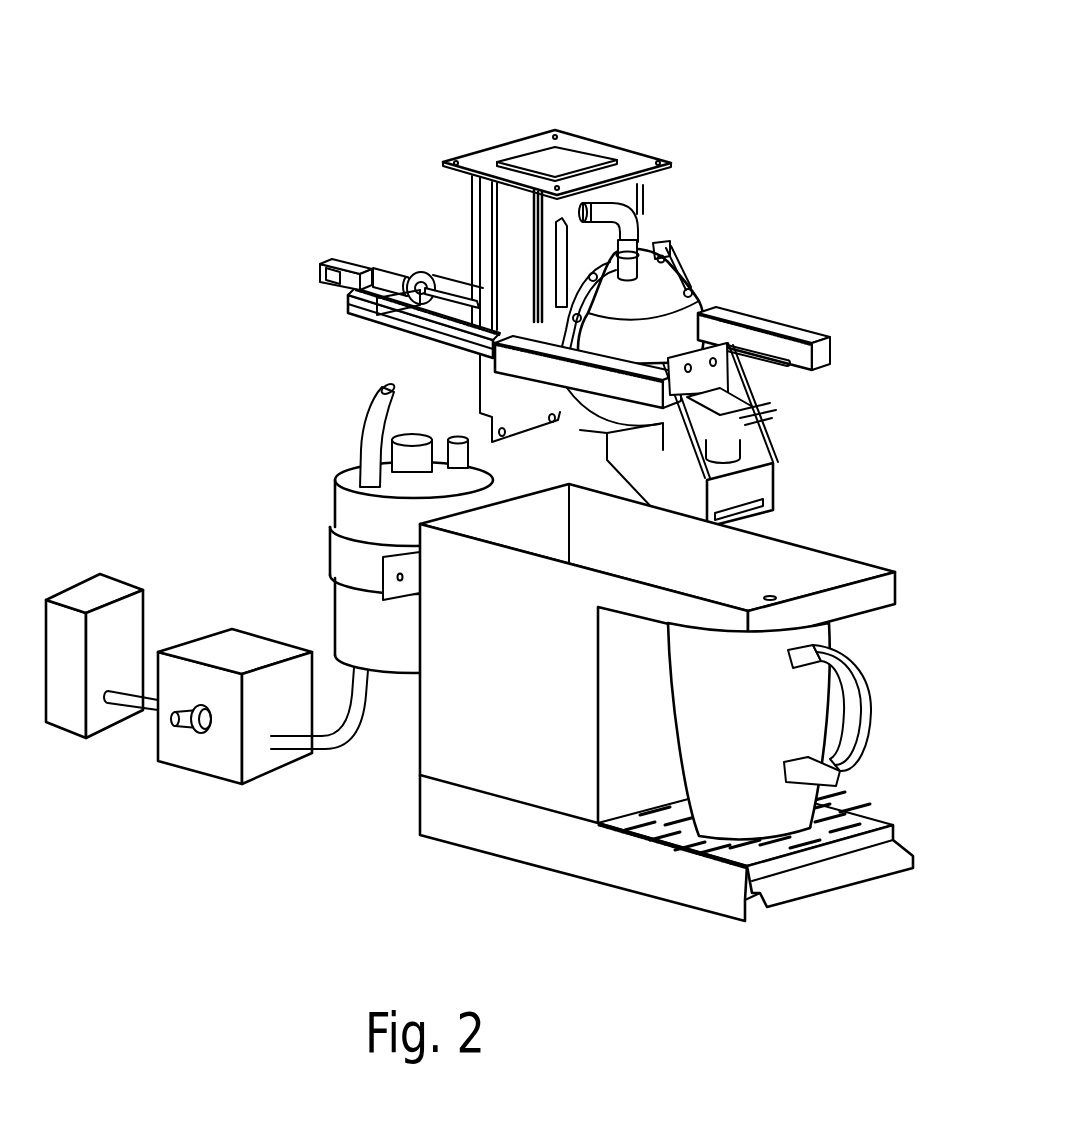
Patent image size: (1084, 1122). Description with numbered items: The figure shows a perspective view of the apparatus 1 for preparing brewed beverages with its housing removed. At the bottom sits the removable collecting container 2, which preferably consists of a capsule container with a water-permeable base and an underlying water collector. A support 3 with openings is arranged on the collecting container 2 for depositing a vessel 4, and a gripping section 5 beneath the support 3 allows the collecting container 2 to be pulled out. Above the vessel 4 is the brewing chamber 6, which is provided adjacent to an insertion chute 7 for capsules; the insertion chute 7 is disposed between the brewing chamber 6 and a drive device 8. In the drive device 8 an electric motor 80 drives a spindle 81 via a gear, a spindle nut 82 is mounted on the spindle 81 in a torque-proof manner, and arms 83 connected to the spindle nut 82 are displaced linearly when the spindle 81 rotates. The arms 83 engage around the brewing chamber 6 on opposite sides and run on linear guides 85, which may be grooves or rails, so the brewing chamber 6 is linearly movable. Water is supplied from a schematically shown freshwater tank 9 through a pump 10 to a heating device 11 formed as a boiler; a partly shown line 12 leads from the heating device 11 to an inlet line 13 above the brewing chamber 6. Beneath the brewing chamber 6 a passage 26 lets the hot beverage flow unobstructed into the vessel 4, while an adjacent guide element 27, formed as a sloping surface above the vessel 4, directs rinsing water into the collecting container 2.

The apparatus for preparing brewed beverages 1 is at (924, 275).
The collecting container 2 is at (470, 736).
The support 3 is at (866, 813).
The vessel 4 is at (798, 702).
The gripping section 5 is at (823, 868).
The brewing chamber 6 is at (655, 291).
The insertion chute 7 is at (568, 150).
The drive device 8 is at (366, 185).
The tank 9 is at (113, 625).
The pump 10 is at (201, 750).
The heating device 11 is at (360, 602).
The line 12 is at (362, 430).
The inlet line 13 is at (622, 210).
The passage 26 is at (727, 586).
The guide element 27 is at (774, 594).
The electric motor 80 is at (337, 257).
The spindle 81 is at (457, 300).
The spindle nut 82 is at (404, 276).
The arms 83 is at (383, 313).
The linear guides 85 is at (527, 360).